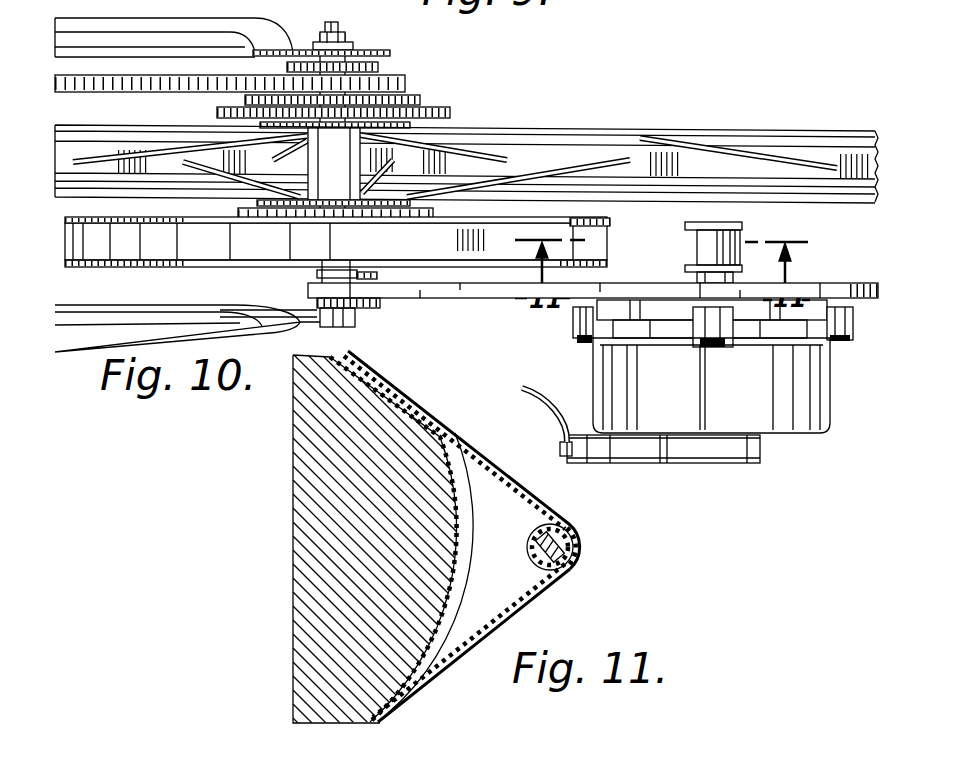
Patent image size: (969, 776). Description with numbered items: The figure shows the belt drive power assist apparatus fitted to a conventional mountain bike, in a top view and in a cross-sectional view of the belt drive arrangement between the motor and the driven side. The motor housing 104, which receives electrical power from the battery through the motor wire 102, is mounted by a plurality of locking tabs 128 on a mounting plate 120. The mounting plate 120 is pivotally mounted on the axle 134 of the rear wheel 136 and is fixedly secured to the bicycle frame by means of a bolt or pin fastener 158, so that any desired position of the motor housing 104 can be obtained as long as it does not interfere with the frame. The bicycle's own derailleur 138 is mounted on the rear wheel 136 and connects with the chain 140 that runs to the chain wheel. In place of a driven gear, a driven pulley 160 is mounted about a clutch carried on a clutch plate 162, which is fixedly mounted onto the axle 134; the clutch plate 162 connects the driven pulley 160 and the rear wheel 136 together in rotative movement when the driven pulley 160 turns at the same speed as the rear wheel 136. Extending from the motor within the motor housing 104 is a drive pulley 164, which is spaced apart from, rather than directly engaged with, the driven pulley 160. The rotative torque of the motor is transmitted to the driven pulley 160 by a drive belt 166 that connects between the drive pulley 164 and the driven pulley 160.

In FIG. 10, the motor wire 102 is at (546, 403).
In FIG. 10, the motor housing 104 is at (790, 442).
In FIG. 10, the mounting plate 120 is at (815, 283).
In FIG. 10, the locking tabs 128 is at (582, 322).
In FIG. 10, the axle 134 is at (338, 22).
In FIG. 10, the rear wheel 136 is at (647, 123).
In FIG. 10, the derailleur 138 is at (456, 111).
In FIG. 10, the chain 140 is at (405, 83).
In FIG. 10, the bolt or pin fastener 158 is at (375, 322).
In FIG. 10, the driven pulley 160 is at (228, 263).
In FIG. 11, the driven pulley 160 is at (300, 474).
In FIG. 10, the clutch plate 162 is at (608, 226).
In FIG. 11, the clutch plate 162 is at (400, 390).
In FIG. 10, the drive pulley 164 is at (745, 226).
In FIG. 11, the drive pulley 164 is at (588, 541).
In FIG. 10, the drive belt 166 is at (160, 250).
In FIG. 11, the drive belt 166 is at (532, 603).